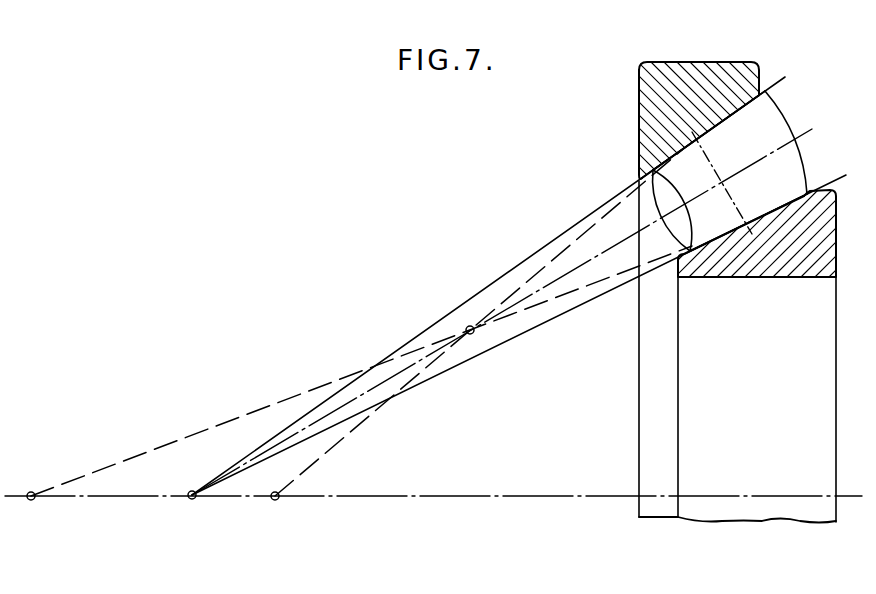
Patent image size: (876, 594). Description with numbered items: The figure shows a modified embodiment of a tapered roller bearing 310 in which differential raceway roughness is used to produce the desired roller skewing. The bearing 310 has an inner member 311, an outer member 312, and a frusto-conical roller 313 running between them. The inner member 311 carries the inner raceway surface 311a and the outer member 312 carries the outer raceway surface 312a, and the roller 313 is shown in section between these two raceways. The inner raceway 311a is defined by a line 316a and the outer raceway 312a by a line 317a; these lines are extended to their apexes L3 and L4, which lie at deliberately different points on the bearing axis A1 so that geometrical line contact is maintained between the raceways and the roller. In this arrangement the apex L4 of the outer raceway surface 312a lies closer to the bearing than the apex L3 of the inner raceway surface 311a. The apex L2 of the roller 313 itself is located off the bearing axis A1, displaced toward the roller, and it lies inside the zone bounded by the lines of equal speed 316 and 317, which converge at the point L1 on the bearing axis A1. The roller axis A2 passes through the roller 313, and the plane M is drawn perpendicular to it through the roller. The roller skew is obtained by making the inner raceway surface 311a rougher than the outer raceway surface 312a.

The bearing 310 is at (706, 56).
The inner member 311 is at (816, 277).
The inner raceway surface 311a is at (728, 233).
The outer member 312 is at (660, 62).
The outer raceway surface 312a is at (678, 161).
The roller 313 is at (784, 194).
The line of equal speed 316 is at (433, 378).
The line defining inner raceway 316a is at (283, 386).
The line of equal speed 317 is at (502, 276).
The line defining outer raceway 317a is at (436, 449).
The bearing axis A1 is at (531, 495).
The roller axis A2 is at (583, 265).
The apex of raceway generatrices on bearing axis L1 is at (194, 500).
The apex of the roller L2 is at (473, 334).
The apex of the inner raceway surface L3 is at (34, 500).
The apex of the outer raceway surface L4 is at (278, 500).
The mid-plane of roller perpendicular to roller axis M is at (702, 143).